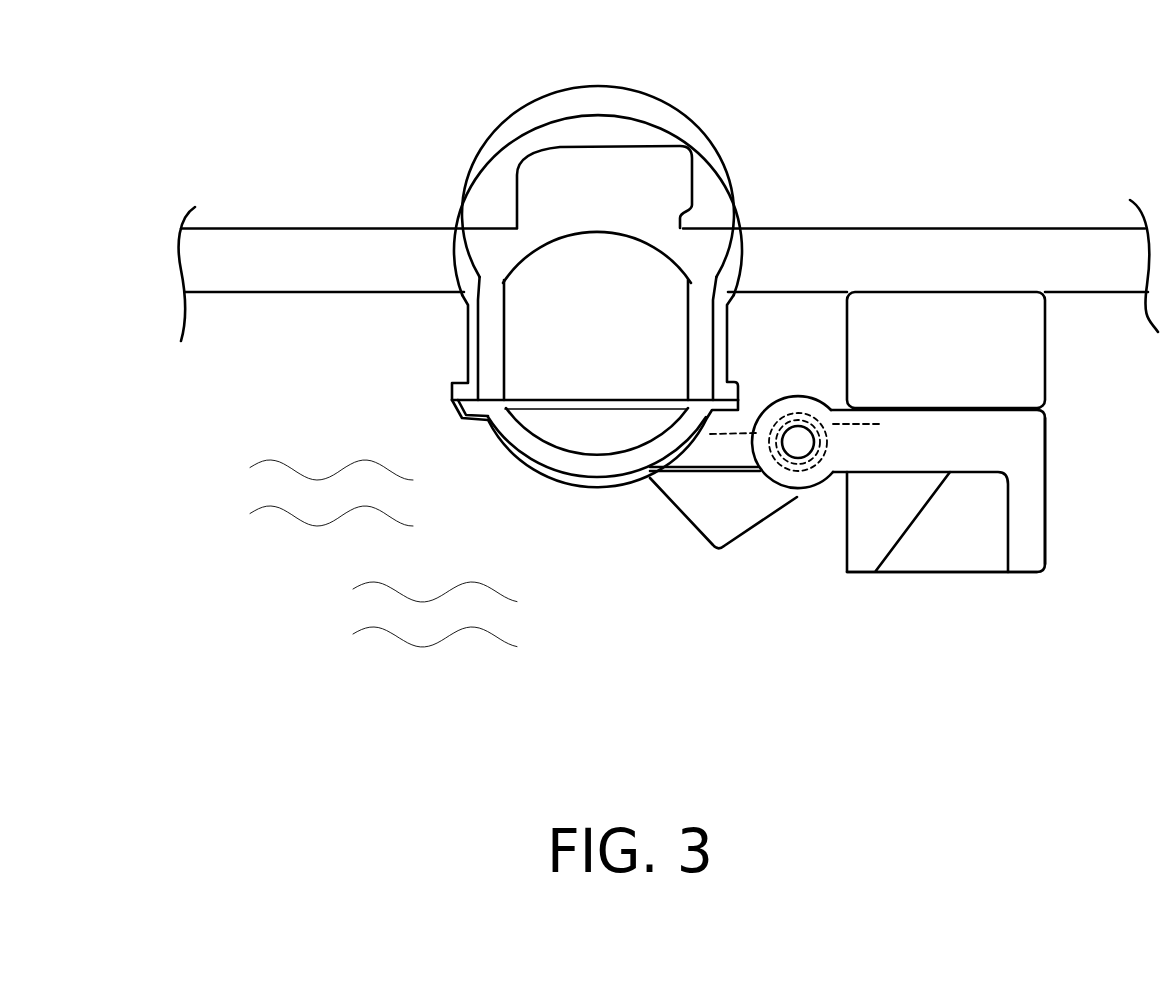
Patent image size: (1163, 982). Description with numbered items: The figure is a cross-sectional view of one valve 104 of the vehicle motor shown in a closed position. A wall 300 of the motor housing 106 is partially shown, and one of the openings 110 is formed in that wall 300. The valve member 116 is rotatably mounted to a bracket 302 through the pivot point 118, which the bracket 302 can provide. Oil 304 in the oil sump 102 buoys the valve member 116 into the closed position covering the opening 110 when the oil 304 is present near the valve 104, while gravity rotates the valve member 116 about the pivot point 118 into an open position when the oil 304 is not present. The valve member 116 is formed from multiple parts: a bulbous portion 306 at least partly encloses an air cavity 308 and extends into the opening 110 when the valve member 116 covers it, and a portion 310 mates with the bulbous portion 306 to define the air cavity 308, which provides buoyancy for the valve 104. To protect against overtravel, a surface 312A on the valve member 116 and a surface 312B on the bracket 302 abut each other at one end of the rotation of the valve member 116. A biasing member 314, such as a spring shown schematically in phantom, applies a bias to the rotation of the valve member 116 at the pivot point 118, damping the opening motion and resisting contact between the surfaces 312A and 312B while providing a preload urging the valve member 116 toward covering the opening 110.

The oil sump 102 is at (1008, 619).
The valve 104 is at (549, 128).
The motor housing 106 is at (991, 150).
The opening 110 is at (488, 255).
The valve member 116 is at (738, 267).
The pivot point 118 is at (792, 460).
The wall 300 is at (996, 272).
The bracket 302 is at (1047, 435).
The oil 304 is at (246, 500).
The bulbous portion 306 is at (547, 243).
The air cavity 308 is at (584, 374).
The portion 310 is at (570, 436).
The surface 312A is at (743, 537).
The surface 312B is at (838, 547).
The biasing member 314 is at (724, 437).